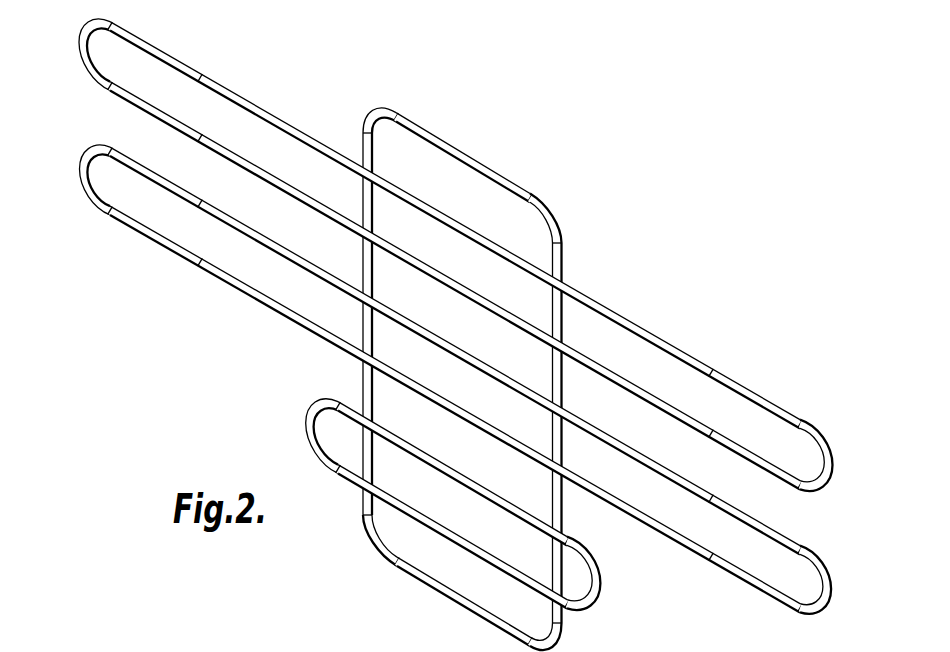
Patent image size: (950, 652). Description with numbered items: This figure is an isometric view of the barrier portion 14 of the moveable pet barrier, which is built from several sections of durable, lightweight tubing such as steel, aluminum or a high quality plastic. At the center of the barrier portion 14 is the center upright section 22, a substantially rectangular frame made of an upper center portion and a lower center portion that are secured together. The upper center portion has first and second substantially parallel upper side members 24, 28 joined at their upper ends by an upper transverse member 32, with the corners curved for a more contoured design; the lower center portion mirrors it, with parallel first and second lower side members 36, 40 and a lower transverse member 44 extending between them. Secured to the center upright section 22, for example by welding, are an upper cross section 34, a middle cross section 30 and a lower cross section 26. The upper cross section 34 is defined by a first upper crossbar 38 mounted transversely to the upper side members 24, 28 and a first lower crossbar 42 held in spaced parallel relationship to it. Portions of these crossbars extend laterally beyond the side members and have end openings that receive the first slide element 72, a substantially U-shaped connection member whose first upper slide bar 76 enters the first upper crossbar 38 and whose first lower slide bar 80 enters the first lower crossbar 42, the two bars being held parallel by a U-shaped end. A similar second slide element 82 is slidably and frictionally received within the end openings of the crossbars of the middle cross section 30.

The barrier portion 14 is at (458, 331).
The center upright section 22 is at (475, 362).
The first upper side member 24 is at (365, 148).
The lower cross section 26 is at (609, 598).
The second upper side member 28 is at (560, 253).
The middle cross section 30 is at (839, 605).
The upper transverse member 32 is at (400, 120).
The upper cross section 34 is at (839, 480).
The first lower side member 36 is at (366, 391).
The first upper crossbar 38 is at (624, 318).
The second lower side member 40 is at (560, 505).
The first lower crossbar 42 is at (615, 373).
The lower transverse member 44 is at (457, 597).
The first slide element 72 is at (484, 262).
The first upper slide bar 76 is at (603, 431).
The first lower slide bar 80 is at (590, 490).
The second slide element 82 is at (458, 361).